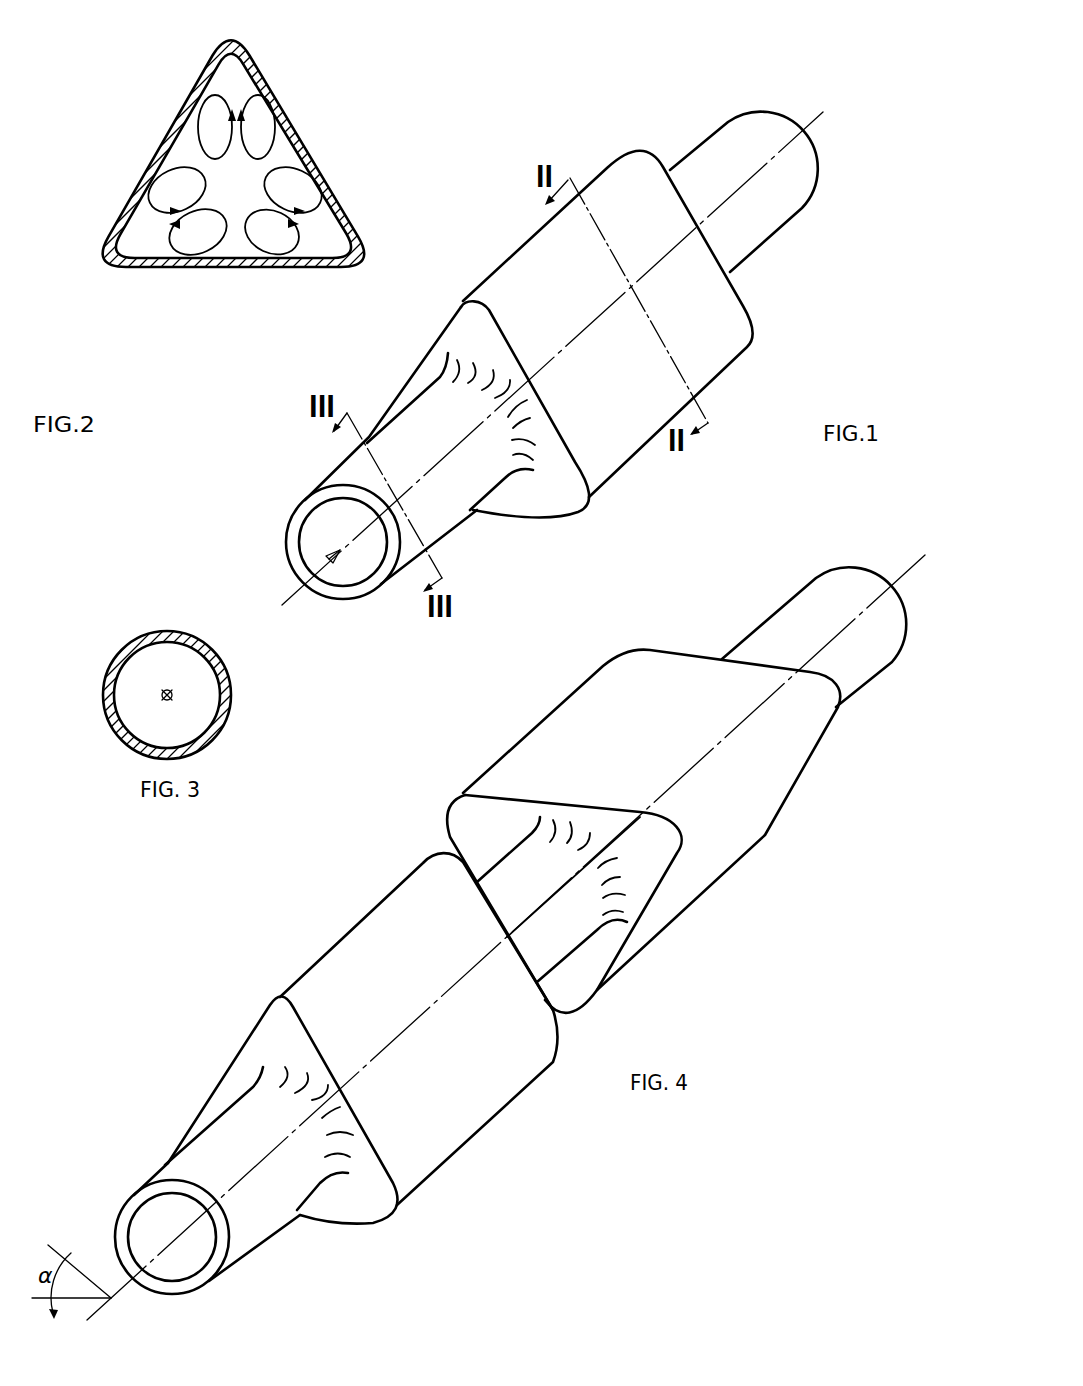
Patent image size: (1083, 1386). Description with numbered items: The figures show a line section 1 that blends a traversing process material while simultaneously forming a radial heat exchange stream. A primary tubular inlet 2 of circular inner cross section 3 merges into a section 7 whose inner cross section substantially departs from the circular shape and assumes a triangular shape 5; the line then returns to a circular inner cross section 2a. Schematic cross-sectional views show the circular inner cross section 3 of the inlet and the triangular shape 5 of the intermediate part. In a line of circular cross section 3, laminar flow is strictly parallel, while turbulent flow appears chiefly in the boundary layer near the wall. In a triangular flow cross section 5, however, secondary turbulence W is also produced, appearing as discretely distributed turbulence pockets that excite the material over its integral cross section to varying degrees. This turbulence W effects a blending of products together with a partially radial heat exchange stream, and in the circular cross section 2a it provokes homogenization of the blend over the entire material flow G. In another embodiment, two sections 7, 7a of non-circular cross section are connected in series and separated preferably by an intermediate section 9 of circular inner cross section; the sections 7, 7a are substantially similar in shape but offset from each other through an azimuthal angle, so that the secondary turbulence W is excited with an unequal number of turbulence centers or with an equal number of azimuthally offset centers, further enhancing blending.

In FIG. 2, the line section 1 is at (247, 43).
In FIG. 1, the line section 1 is at (551, 355).
In FIG. 3, the line section 1 is at (130, 648).
In FIG. 4, the line section 1 is at (510, 930).
In FIG. 1, the primary tubular inlet 2 is at (350, 453).
In FIG. 4, the primary tubular inlet 2 is at (207, 1228).
In FIG. 1, the circular inner cross section 2a is at (777, 213).
In FIG. 4, the circular inner cross section 2a is at (814, 637).
In FIG. 1, the circular inner cross section 3 is at (322, 524).
In FIG. 3, the circular inner cross section 3 is at (198, 678).
In FIG. 4, the circular inner cross section 3 is at (172, 1237).
In FIG. 2, the triangular shape 5 is at (243, 72).
In FIG. 1, the triangular shape 5 is at (553, 450).
In FIG. 1, the section having a triangular cross section 7 is at (593, 183).
In FIG. 4, the section having a triangular cross section 7 is at (463, 1117).
In FIG. 4, the section 7a is at (703, 858).
In FIG. 4, the intermediate section 9 is at (562, 937).
In FIG. 2, the turbulence W is at (277, 110).
In FIG. 1, the flow G is at (307, 574).
In FIG. 3, the flow G is at (167, 713).